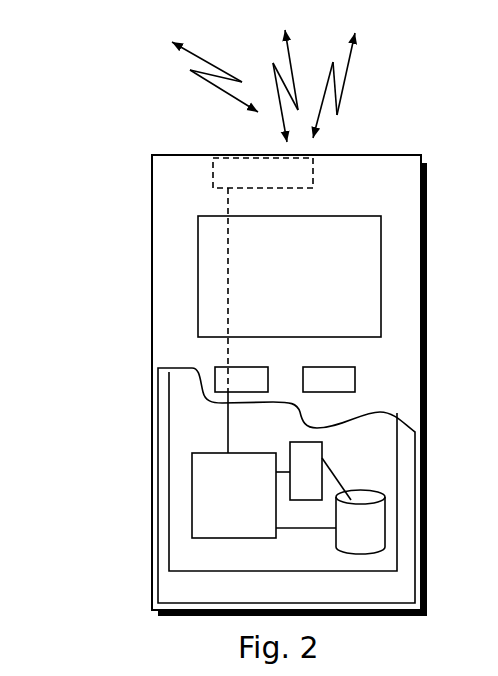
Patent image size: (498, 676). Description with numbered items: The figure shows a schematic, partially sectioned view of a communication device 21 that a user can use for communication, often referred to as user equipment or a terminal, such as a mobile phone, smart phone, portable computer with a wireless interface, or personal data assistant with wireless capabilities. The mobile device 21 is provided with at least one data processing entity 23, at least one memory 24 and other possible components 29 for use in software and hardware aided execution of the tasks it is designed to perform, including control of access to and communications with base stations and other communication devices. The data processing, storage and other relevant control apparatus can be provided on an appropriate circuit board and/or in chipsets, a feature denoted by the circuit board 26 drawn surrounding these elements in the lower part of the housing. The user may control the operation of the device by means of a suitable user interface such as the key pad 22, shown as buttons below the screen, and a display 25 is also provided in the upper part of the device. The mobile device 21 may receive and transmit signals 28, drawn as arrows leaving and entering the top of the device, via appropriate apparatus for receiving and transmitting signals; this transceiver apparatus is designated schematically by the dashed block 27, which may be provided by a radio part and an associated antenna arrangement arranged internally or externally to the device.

The communication device 21 is at (155, 193).
The key pad 22 is at (220, 380).
The data processing entity 23 is at (199, 481).
The memory 24 is at (355, 531).
The display 25 is at (215, 264).
The circuit board 26 is at (192, 557).
The transceiver apparatus 27 is at (232, 155).
The signals 28 is at (358, 98).
The other components 29 is at (307, 458).